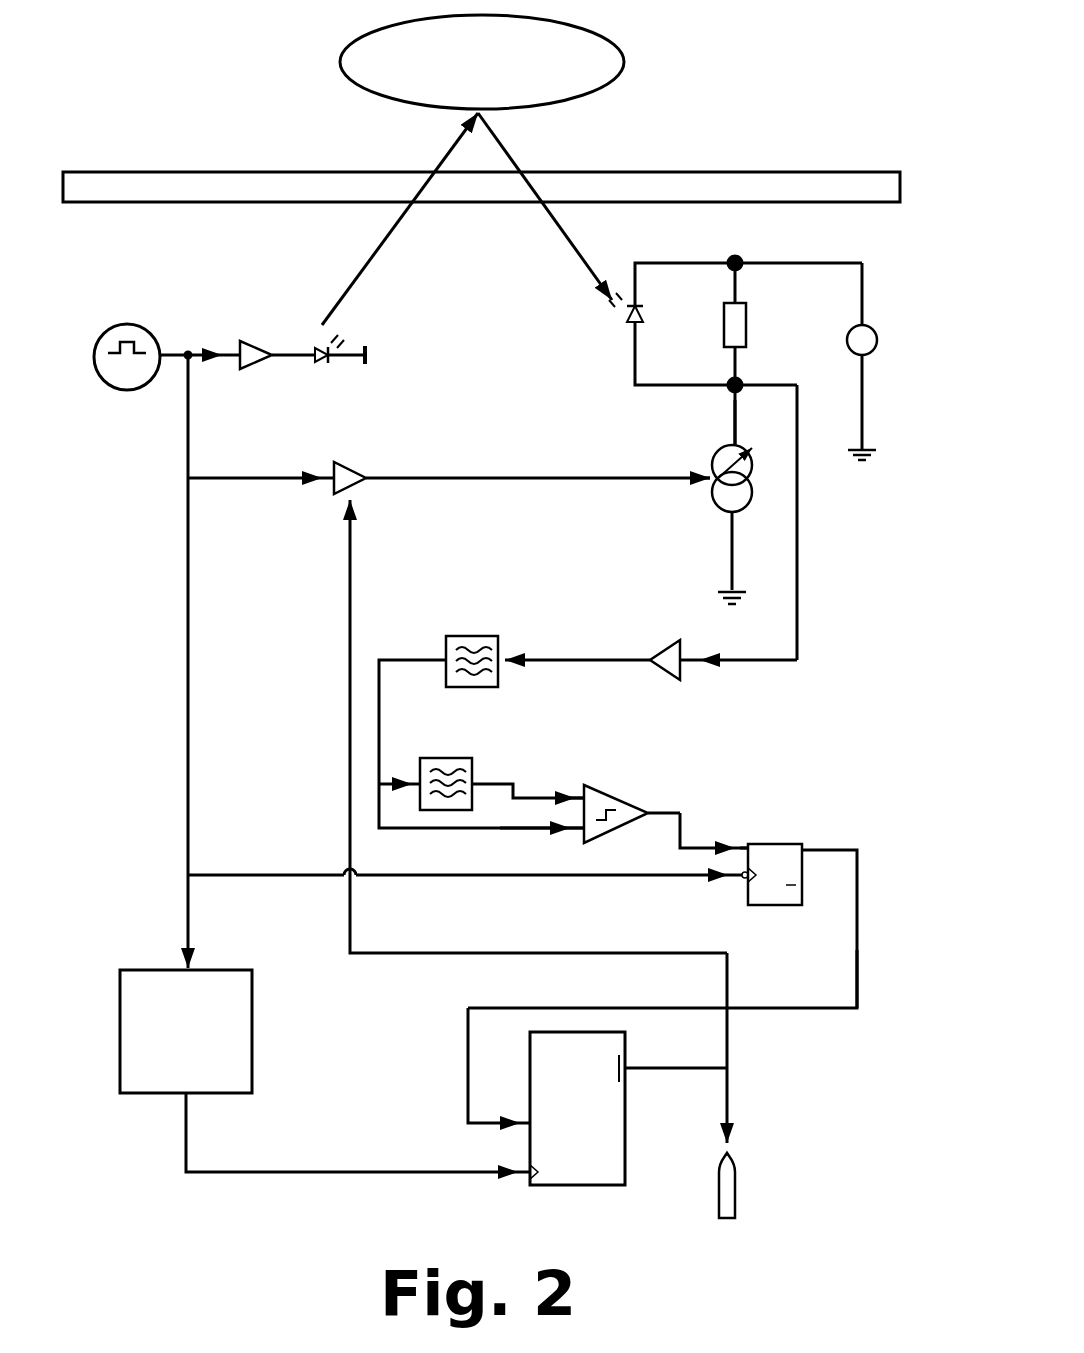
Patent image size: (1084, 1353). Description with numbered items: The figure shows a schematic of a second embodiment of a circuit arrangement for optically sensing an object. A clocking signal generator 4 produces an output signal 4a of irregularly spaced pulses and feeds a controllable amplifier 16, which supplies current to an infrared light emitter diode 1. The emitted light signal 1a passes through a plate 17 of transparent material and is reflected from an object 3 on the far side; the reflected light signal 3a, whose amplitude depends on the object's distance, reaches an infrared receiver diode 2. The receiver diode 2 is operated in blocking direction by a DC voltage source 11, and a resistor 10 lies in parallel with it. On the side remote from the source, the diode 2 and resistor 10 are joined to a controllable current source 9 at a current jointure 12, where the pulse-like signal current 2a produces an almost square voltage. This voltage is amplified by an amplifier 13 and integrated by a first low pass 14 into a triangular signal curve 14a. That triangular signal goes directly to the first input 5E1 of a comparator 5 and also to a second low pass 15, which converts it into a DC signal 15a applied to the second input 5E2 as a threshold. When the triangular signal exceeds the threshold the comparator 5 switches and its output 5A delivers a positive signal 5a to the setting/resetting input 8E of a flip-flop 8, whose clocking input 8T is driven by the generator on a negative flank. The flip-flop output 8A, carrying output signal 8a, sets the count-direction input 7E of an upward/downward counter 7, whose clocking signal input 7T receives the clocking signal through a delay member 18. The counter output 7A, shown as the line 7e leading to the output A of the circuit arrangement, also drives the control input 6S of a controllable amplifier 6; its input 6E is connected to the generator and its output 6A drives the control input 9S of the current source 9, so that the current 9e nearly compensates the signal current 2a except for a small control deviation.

The infrared light emitter diode 1 is at (320, 375).
The light signal 1a is at (370, 280).
The infrared receiver diode 2 is at (626, 320).
The signal current 2a is at (635, 383).
The object 3 is at (612, 45).
The reflected light signal 3a is at (575, 250).
The clocking signal generator 4 is at (145, 330).
The output signal of the clocking signal generator 4a is at (200, 355).
The comparator 5 is at (605, 788).
The output of the comparator 5A is at (660, 808).
The positive signal 5a is at (690, 840).
The first input of the comparator 5E1 is at (550, 830).
The second input of the comparator 5E2 is at (555, 798).
The controllable amplifier 6 is at (352, 462).
The output of the controllable amplifier 6A is at (400, 478).
The input of the controllable amplifier 6E is at (305, 486).
The control input of the controllable amplifier 6S is at (345, 515).
The upward/downward counter 7 is at (580, 1190).
The output of the upward/downward counter 7A is at (640, 1072).
The count-direction input 7E is at (528, 1128).
The clocking signal input of the counter 7T is at (510, 1178).
The counter output line 7e is at (703, 1062).
The flip-flop 8 is at (780, 844).
The output of the flip-flop 8A is at (812, 848).
The setting/resetting input of the flip-flop 8E is at (736, 848).
The clocking input of the flip-flop 8T is at (720, 876).
The output signal of the flip-flop 8a is at (857, 940).
The controllable current source 9 is at (724, 512).
The control input of the controllable current source 9S is at (700, 488).
The current 9e is at (735, 422).
The resistor 10 is at (755, 325).
The DC voltage source 11 is at (852, 357).
The current jointure 12 is at (717, 403).
The amplifier 13 is at (680, 638).
The first low pass 14 is at (466, 636).
The triangular signal curve 14a is at (379, 660).
The second low pass 15 is at (438, 758).
The DC signal 15a is at (505, 784).
The controllable amplifier 16 is at (260, 374).
The plate 17 is at (128, 172).
The delay member 18 is at (215, 975).
The output of the circuit arrangement A is at (740, 1188).